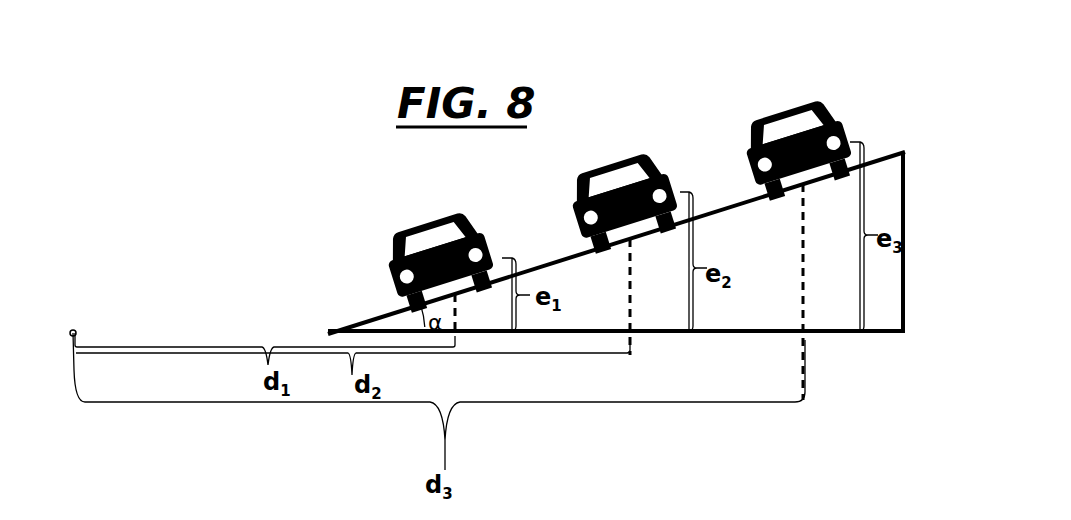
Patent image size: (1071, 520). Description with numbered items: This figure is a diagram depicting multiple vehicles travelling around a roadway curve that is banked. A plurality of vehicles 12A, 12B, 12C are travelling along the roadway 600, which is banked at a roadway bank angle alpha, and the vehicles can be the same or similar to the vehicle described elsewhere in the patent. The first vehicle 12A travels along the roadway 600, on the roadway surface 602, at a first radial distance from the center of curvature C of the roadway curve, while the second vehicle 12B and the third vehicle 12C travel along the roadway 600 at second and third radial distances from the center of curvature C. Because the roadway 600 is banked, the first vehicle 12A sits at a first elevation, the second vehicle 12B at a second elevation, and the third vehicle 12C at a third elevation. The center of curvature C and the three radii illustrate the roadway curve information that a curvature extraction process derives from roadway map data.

The roadway 600 is at (397, 156).
The roadway surface 602 is at (899, 157).
The first vehicle 12A is at (445, 214).
The second vehicle 12B is at (626, 158).
The third vehicle 12C is at (792, 104).
The center of curvature C is at (76, 330).